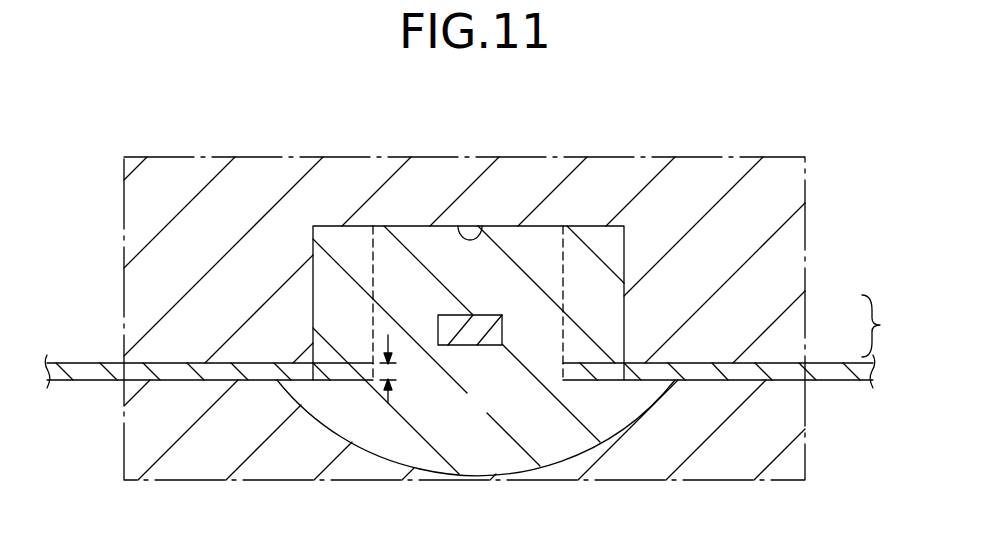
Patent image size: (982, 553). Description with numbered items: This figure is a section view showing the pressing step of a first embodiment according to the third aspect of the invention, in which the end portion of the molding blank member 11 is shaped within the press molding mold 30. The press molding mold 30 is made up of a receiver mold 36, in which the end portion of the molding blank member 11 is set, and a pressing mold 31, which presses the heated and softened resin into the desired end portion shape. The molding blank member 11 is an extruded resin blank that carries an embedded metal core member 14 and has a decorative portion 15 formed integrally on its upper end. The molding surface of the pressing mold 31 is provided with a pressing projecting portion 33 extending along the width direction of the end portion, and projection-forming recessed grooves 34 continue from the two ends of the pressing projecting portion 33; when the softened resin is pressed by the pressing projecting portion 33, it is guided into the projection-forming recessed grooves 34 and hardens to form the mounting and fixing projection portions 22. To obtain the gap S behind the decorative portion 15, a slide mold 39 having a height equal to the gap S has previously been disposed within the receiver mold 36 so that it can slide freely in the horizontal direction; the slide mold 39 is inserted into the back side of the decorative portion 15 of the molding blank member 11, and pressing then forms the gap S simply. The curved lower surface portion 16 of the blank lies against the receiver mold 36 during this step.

The molding blank member 11 is at (484, 429).
The metal core member 14 is at (490, 315).
The decorative portion 15 is at (392, 443).
The curved surface portion 16 is at (345, 448).
The mounting and fixing projection portion 22 is at (350, 245).
The press molding mold 30 is at (517, 318).
The pressing mold 31 is at (790, 298).
The pressing projecting portion 33 is at (476, 236).
The projection-forming recessed groove 34 is at (315, 313).
The receiver mold 36 is at (793, 402).
The slide mold 39 is at (82, 372).
The gap S is at (395, 372).